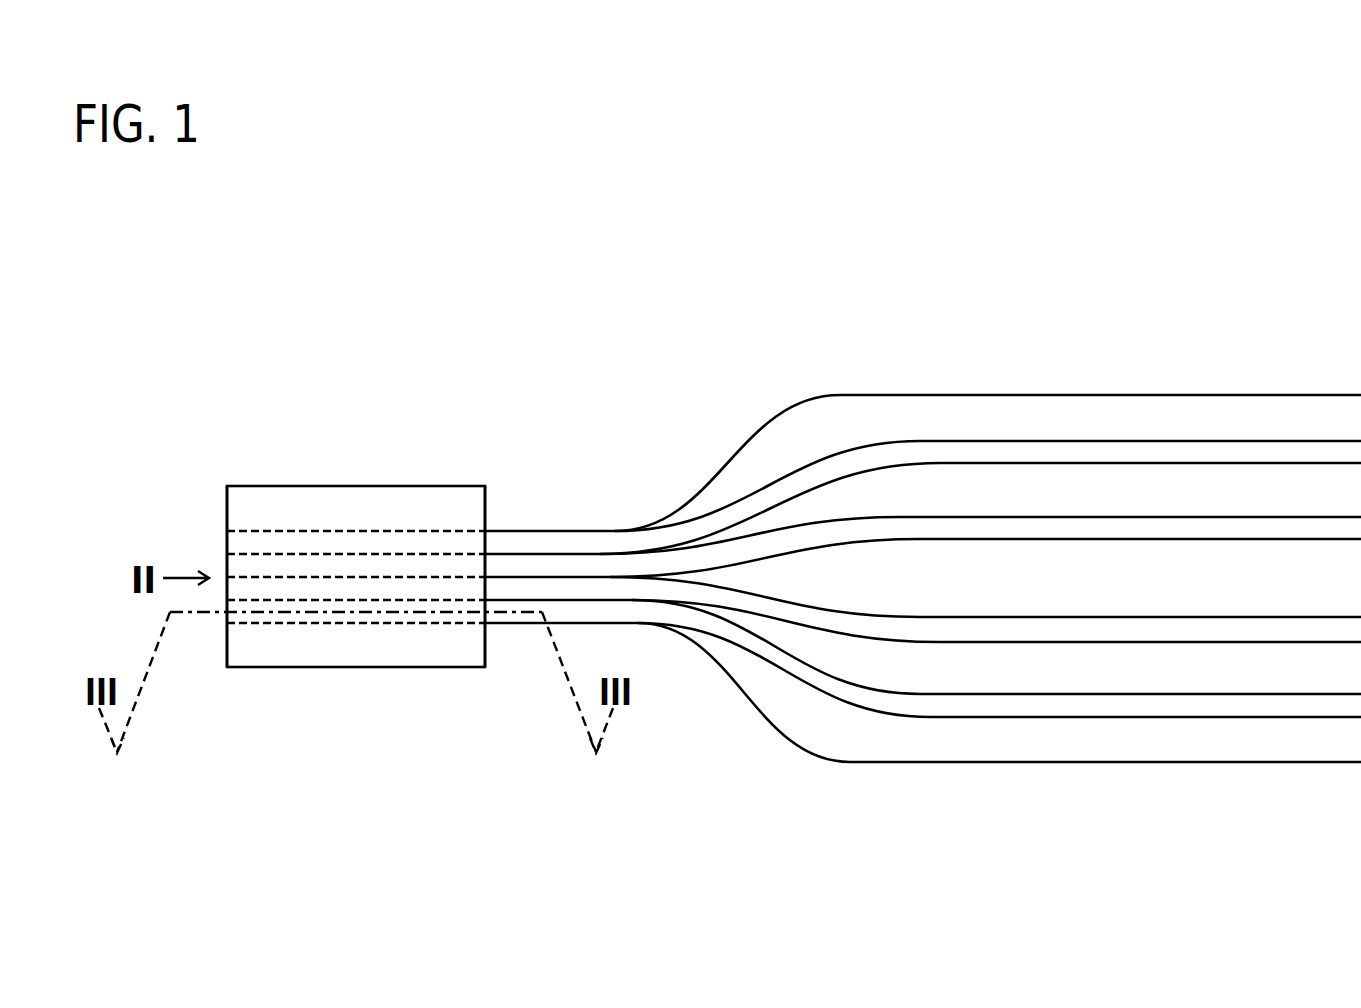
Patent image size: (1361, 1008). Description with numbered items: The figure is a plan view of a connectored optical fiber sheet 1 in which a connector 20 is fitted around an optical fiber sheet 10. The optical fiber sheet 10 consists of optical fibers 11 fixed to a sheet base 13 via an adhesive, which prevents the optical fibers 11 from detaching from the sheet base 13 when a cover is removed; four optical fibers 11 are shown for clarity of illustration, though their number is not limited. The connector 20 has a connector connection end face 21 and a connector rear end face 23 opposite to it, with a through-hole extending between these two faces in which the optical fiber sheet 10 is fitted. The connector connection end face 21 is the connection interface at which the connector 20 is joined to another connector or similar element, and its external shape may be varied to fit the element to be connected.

The connectored optical fiber sheet 1 is at (598, 393).
The optical fiber sheet 10 is at (623, 489).
The optical fibers 11 is at (1175, 527).
The sheet base 13 is at (1316, 410).
The connector 20 is at (443, 505).
The connector connection end face 21 is at (227, 508).
The connector rear end face 23 is at (485, 656).